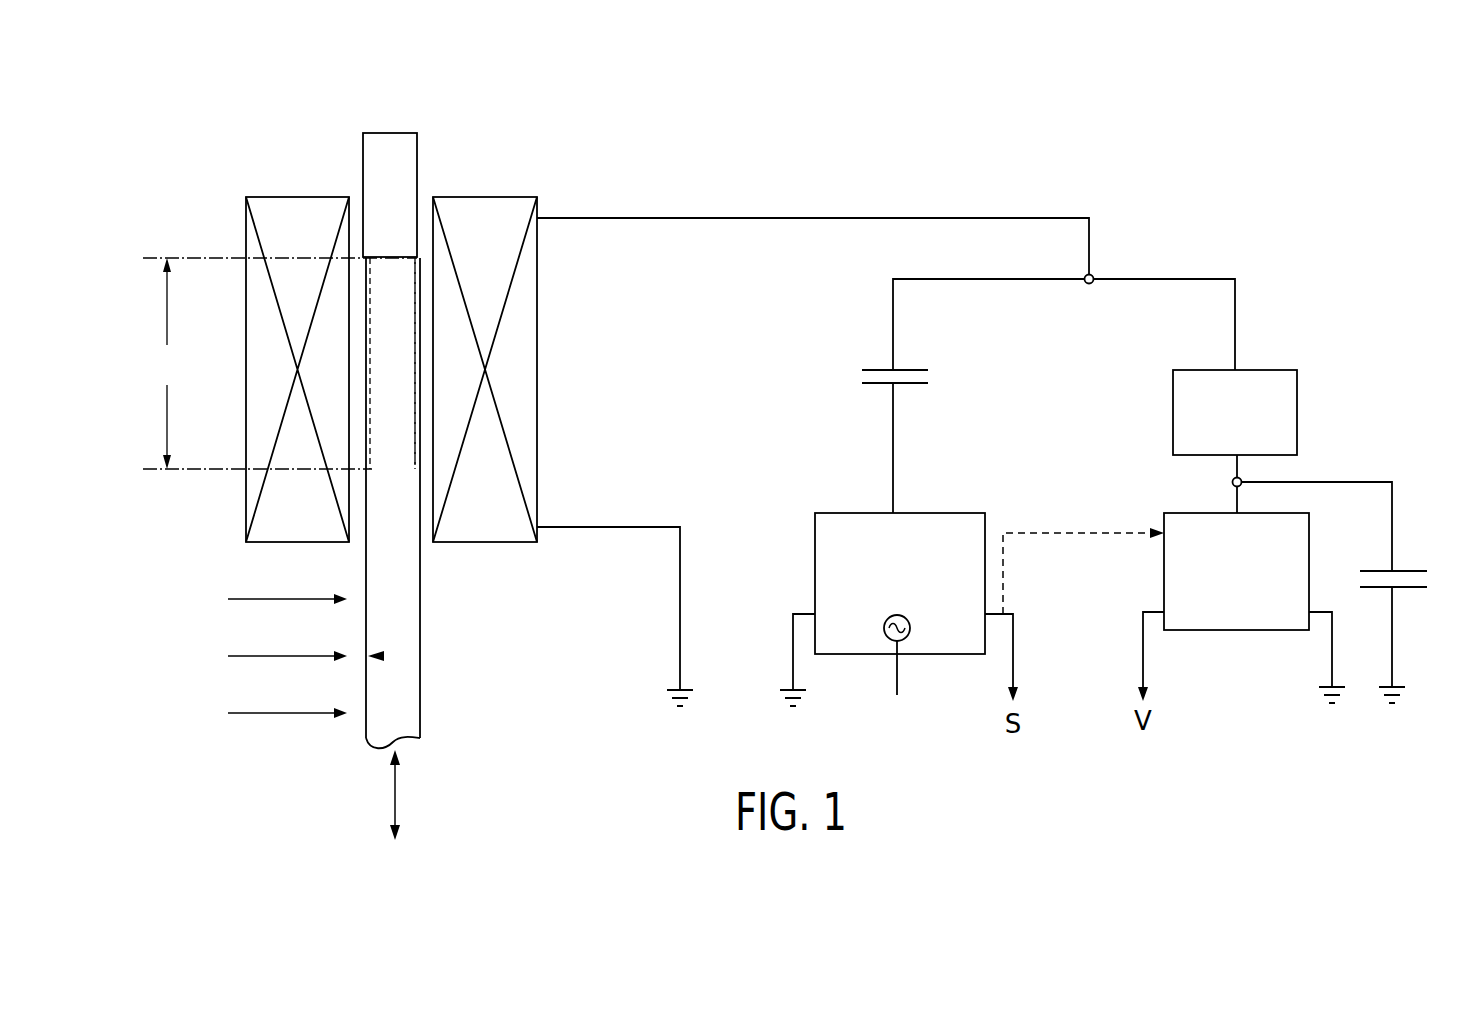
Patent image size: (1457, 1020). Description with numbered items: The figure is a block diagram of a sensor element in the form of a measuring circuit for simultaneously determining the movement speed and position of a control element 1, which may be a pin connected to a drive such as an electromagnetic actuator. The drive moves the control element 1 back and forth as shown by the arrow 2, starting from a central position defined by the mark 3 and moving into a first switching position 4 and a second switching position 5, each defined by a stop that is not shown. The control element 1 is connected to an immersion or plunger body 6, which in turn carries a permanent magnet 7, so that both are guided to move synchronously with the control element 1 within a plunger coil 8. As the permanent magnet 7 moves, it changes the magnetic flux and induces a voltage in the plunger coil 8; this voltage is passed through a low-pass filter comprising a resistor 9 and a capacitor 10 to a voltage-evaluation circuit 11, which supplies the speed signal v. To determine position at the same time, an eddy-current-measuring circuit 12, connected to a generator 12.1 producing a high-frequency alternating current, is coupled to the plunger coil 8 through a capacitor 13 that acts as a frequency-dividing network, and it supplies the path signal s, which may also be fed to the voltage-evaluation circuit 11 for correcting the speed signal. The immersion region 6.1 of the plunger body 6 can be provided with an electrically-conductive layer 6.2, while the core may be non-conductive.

The control element 1 is at (422, 642).
The arrow 2 is at (395, 797).
The mark 3 is at (228, 656).
The first switching position 4 is at (228, 599).
The second switching position 5 is at (228, 713).
The immersion or plunger body 6 is at (428, 383).
The immersion region 6.1 is at (280, 363).
The electrically-conductive layer 6.2 is at (423, 325).
The permanent magnet 7 is at (418, 165).
The plunger coil 8 is at (488, 197).
The resistor 9 is at (1213, 368).
The capacitor 10 is at (1415, 568).
The voltage-evaluation circuit 11 is at (1168, 512).
The eddy-current-measuring circuit 12 is at (867, 512).
The generator 12.1 is at (908, 638).
The capacitor 13 is at (872, 367).